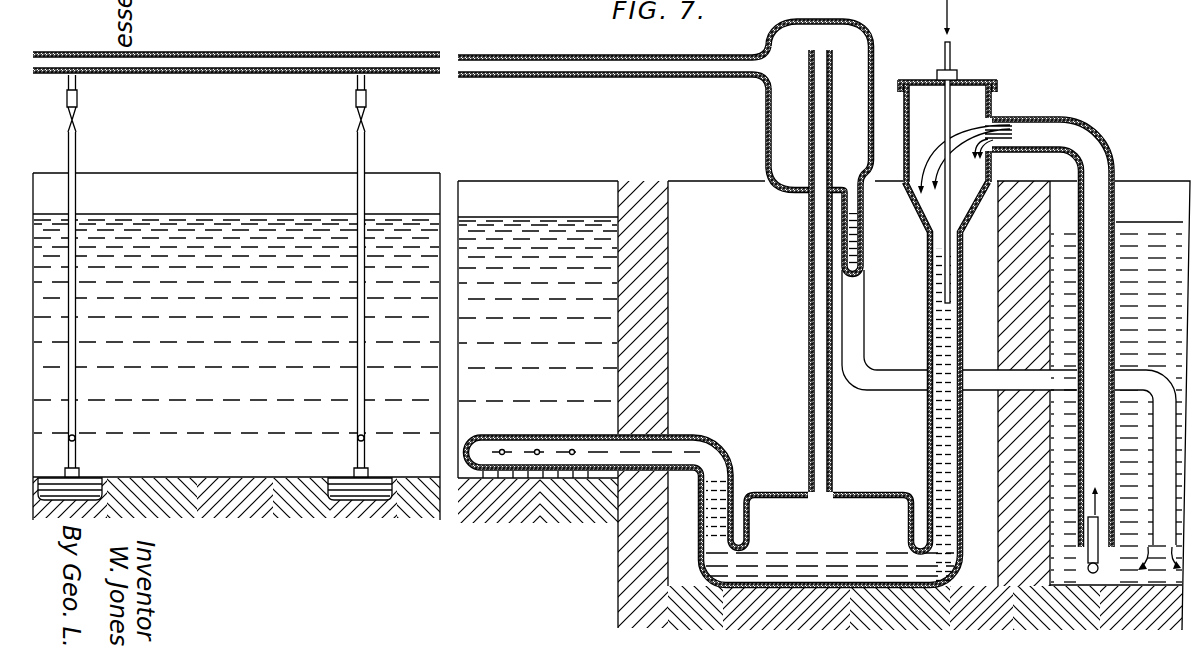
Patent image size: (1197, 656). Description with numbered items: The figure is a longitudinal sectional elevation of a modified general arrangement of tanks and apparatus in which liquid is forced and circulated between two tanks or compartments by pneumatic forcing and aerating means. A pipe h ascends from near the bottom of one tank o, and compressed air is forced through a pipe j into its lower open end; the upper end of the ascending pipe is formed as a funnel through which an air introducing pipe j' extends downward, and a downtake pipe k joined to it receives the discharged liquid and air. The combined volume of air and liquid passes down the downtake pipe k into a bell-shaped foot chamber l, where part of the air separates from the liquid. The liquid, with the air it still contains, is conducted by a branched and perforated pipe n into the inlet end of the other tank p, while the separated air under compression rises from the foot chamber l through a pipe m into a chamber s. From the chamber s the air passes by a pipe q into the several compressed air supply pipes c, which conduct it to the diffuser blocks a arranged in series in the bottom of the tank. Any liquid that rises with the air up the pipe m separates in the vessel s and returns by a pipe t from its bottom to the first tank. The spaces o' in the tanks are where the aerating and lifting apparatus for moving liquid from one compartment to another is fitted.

The pipe q is at (192, 62).
The compressed air supply pipes c is at (77, 151).
The diffuser blocks a is at (53, 478).
The tank p is at (597, 173).
The chamber s is at (788, 118).
The pipe m is at (817, 333).
The pipe t is at (862, 228).
The downtake pipe k is at (927, 297).
The foot chamber l is at (828, 510).
The pipe n is at (500, 436).
The spaces o' is at (789, 332).
The tank o is at (1093, 390).
The pipe h is at (964, 100).
The air introducing pipe j' is at (929, 151).
The pipe j is at (1103, 533).